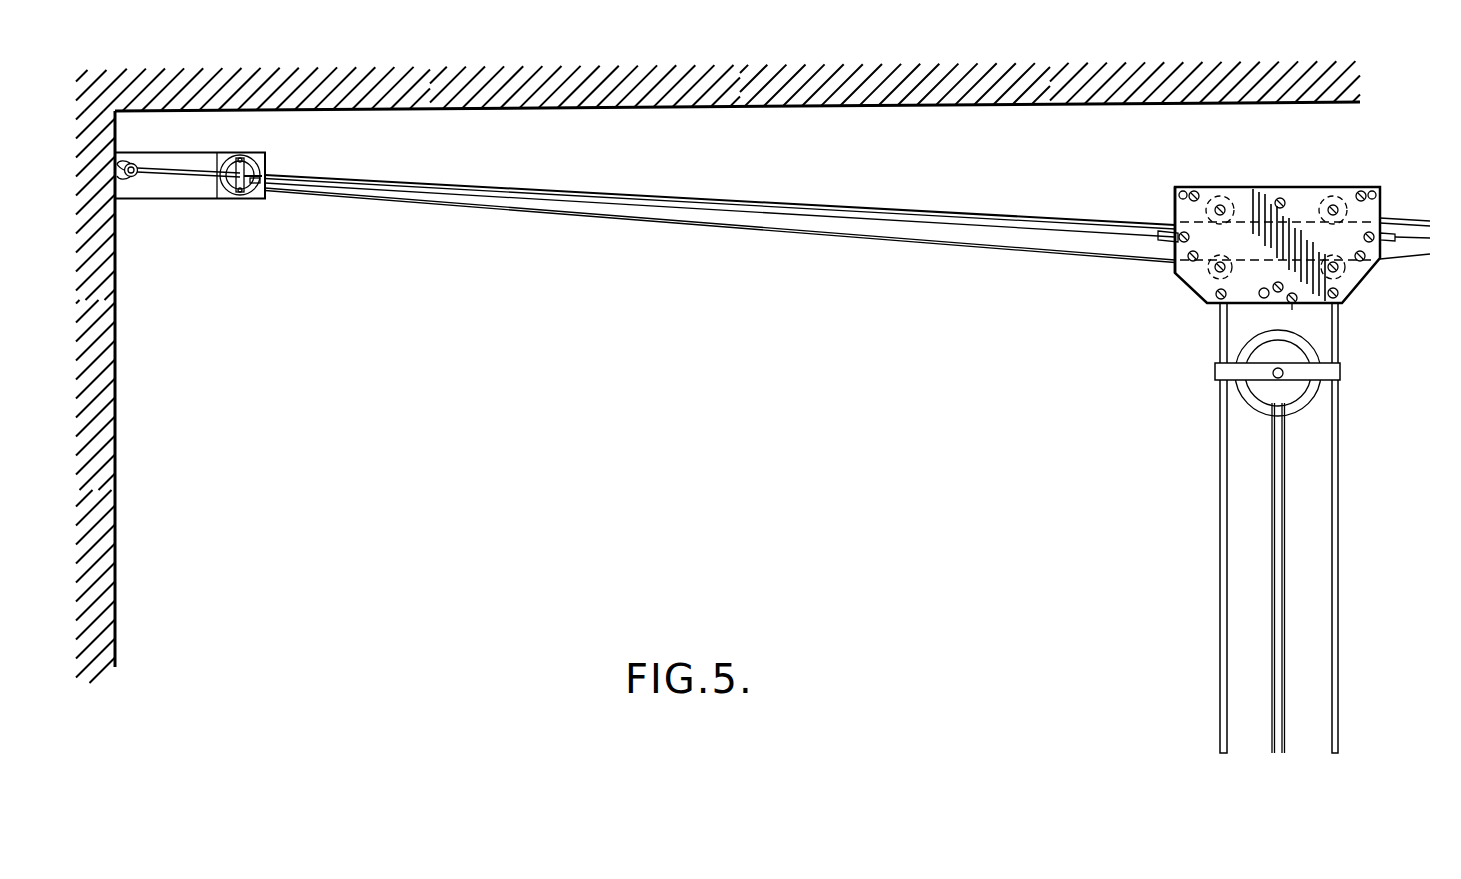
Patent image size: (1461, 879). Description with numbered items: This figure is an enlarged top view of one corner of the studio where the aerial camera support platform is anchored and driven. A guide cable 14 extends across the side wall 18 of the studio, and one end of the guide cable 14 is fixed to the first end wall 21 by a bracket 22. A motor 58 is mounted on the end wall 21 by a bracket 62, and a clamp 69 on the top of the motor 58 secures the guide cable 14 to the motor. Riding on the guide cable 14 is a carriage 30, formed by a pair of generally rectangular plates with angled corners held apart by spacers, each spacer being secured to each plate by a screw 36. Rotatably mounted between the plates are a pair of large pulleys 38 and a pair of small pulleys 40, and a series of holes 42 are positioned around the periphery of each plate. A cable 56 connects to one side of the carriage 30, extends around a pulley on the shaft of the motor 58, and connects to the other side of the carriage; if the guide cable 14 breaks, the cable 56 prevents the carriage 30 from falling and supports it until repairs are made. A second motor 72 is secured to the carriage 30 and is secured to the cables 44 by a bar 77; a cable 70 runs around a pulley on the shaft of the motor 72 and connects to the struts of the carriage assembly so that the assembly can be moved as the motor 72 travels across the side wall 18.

The guide cable 14 is at (903, 205).
The side wall 18 is at (1003, 105).
The first end wall 21 is at (115, 391).
The bracket 22 is at (137, 177).
The carriage 30 is at (1180, 293).
The screw 36 is at (1175, 270).
The large pulley 38 is at (1247, 193).
The small pulley 40 is at (1372, 257).
The hole 42 is at (1292, 301).
The cable 44 is at (1220, 560).
The cable 56 is at (920, 240).
The motor 58 is at (252, 208).
The bracket 62 is at (195, 198).
The clamp 69 is at (262, 195).
The cable 70 is at (1270, 613).
The motor 72 is at (1315, 413).
The bar 77 is at (1340, 378).